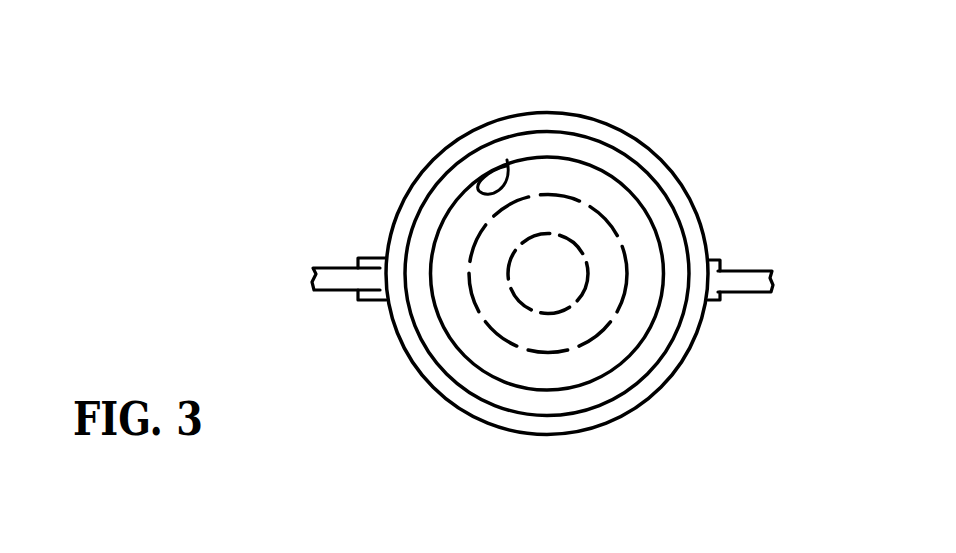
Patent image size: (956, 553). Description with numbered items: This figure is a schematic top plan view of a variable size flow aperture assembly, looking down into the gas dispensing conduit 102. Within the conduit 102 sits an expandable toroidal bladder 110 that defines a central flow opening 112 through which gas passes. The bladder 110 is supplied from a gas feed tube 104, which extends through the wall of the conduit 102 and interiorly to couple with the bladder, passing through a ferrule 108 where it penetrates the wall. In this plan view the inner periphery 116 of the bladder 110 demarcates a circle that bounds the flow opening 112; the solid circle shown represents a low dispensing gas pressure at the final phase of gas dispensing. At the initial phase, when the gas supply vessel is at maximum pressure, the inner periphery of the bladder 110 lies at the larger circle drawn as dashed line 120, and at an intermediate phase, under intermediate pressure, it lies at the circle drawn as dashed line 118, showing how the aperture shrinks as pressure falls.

The gas dispensing conduit 102 is at (665, 163).
The gas feed tube 104 is at (335, 267).
The ferrule 108 is at (365, 300).
The expandable toroidal bladder 110 is at (572, 147).
The central flow opening 112 is at (605, 351).
The inner periphery 116 is at (507, 160).
The dashed line 118 is at (470, 255).
The dashed line 120 is at (558, 313).